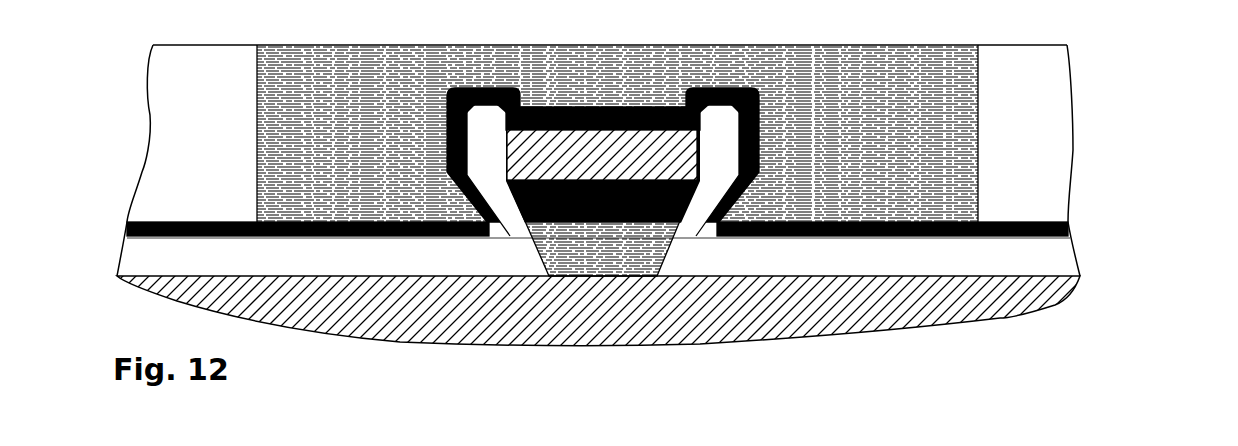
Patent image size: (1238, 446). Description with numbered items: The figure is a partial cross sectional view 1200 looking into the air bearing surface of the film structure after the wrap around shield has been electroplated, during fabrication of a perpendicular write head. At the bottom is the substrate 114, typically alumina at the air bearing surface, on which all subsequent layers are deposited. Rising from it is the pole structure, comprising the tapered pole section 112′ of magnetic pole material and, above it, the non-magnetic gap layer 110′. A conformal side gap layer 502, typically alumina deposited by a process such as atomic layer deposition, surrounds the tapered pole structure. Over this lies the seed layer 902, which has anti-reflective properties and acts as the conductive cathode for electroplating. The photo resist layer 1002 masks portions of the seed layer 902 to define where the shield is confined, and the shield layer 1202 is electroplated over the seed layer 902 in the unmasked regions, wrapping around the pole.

The photo resist layer 1002 is at (161, 155).
The shield layer 1202 is at (314, 152).
The seed layer 902 is at (767, 137).
The gap layer 110′ is at (607, 166).
The tapered pole section 112′ is at (581, 250).
The substrate 114 is at (560, 331).
The side gap layer 502 is at (1050, 270).
The partial cross sectional view 1200 is at (1098, 96).